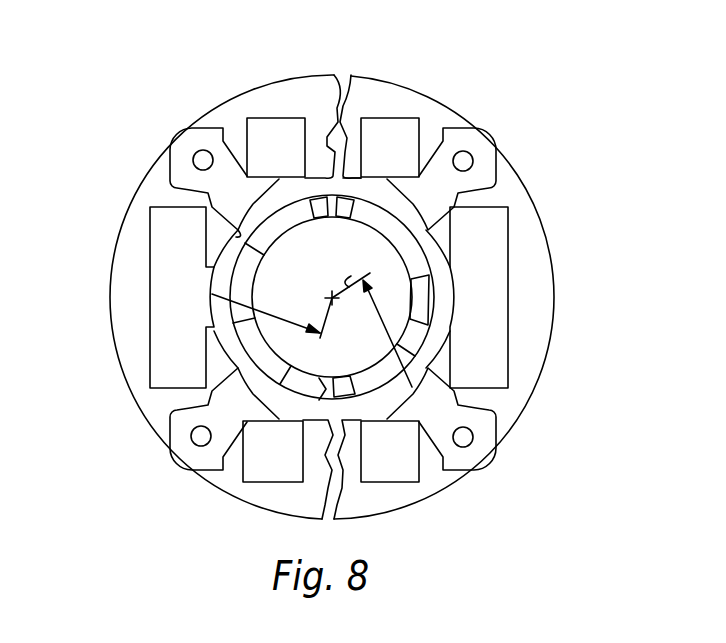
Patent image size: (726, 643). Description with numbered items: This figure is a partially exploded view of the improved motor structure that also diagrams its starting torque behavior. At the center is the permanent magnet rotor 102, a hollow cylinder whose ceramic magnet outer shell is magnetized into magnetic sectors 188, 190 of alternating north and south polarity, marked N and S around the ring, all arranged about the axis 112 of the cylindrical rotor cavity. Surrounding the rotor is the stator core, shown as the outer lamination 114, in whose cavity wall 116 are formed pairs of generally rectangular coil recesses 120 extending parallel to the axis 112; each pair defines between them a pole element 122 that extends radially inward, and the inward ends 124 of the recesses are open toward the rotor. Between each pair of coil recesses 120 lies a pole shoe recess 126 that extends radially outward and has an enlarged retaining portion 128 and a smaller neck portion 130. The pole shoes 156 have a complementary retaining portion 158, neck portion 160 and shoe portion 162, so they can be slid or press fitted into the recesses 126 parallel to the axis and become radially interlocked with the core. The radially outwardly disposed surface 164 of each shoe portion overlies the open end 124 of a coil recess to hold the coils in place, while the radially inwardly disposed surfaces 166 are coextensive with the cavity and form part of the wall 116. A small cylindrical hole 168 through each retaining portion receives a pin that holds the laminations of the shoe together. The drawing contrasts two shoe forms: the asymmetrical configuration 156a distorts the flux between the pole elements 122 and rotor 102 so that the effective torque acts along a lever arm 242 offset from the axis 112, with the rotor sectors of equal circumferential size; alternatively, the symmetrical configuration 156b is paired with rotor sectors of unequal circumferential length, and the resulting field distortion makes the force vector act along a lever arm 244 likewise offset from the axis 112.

The permanent magnet rotor 102 is at (385, 222).
The axis 112 is at (331, 297).
The stator 114 is at (423, 103).
The wall 116 is at (363, 186).
The coil recesses 120 is at (268, 118).
The pole element 122 is at (317, 137).
The ends 124 is at (318, 183).
The pole shoe recess 126 is at (197, 152).
The enlarged retaining portion 128 is at (450, 132).
The neck portion 130 is at (450, 207).
The pole shoes 156 is at (223, 127).
The asymmetrical pole shoe configuration 156a is at (224, 299).
The symmetrical pole shoe configuration 156b is at (441, 299).
The retaining portion 158 is at (178, 177).
The neck portion 160 is at (173, 189).
The shoe portion 162 is at (255, 185).
The radially outwardly disposed surface 164 is at (266, 178).
The radially inwardly disposed surfaces 166 is at (236, 236).
The cylindrical hole 168 is at (193, 158).
The magnetic sectors 188 is at (418, 270).
The magnetic sectors 190 is at (413, 318).
The lever arm 242 is at (266, 313).
The lever arm 244 is at (374, 323).